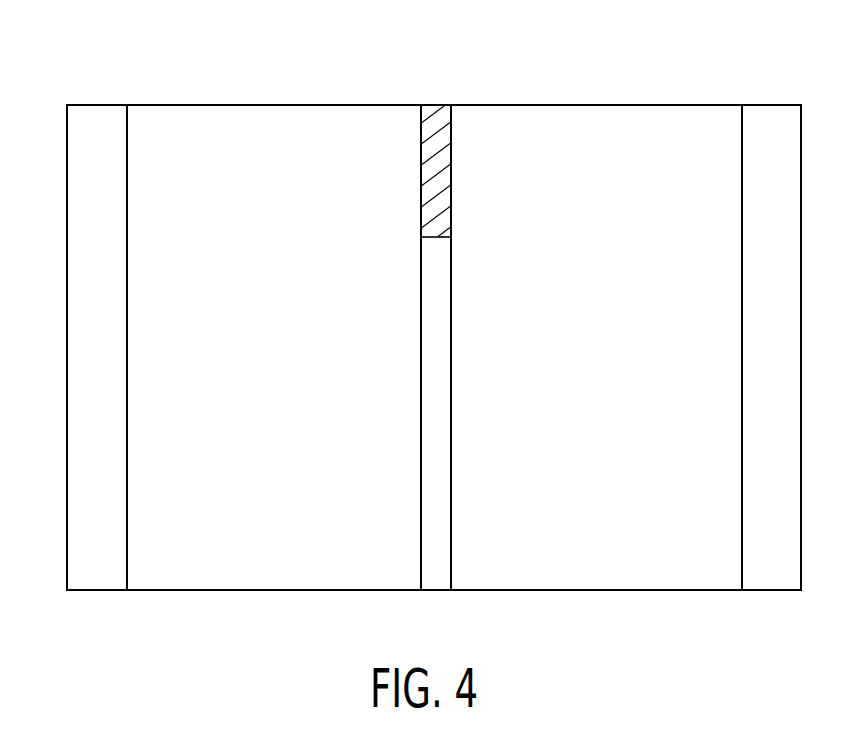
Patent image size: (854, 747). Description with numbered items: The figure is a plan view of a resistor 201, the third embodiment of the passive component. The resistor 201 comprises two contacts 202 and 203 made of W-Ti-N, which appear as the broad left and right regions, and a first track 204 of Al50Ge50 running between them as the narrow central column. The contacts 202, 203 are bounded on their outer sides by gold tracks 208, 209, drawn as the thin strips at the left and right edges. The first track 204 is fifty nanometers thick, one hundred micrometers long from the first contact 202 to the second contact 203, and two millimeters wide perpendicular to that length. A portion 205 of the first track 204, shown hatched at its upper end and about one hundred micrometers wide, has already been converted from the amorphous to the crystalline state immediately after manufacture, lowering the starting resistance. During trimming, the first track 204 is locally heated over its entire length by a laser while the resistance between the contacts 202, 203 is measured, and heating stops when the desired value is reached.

The resistor 201 is at (410, 328).
The contact 202 is at (276, 572).
The contact 203 is at (620, 572).
The first track 204 is at (435, 350).
The portion 205 is at (432, 123).
The gold track 208 is at (116, 573).
The gold track 209 is at (777, 572).